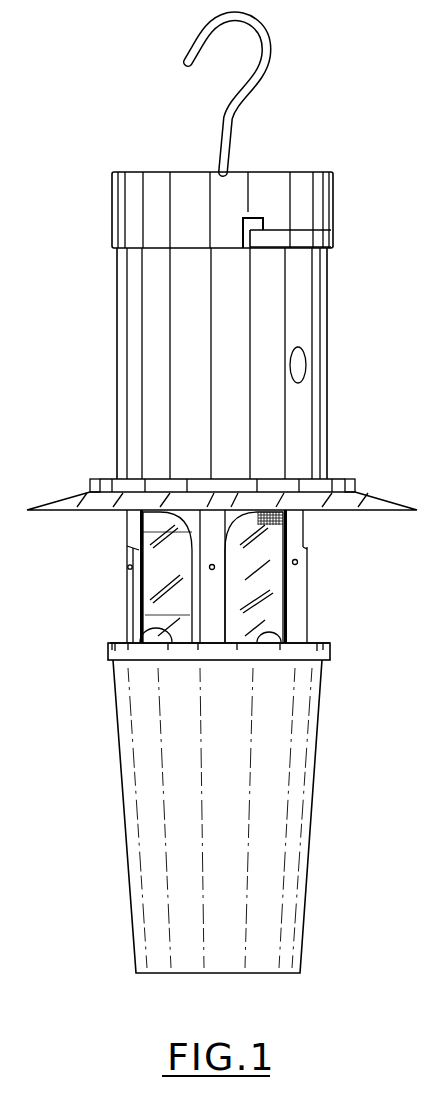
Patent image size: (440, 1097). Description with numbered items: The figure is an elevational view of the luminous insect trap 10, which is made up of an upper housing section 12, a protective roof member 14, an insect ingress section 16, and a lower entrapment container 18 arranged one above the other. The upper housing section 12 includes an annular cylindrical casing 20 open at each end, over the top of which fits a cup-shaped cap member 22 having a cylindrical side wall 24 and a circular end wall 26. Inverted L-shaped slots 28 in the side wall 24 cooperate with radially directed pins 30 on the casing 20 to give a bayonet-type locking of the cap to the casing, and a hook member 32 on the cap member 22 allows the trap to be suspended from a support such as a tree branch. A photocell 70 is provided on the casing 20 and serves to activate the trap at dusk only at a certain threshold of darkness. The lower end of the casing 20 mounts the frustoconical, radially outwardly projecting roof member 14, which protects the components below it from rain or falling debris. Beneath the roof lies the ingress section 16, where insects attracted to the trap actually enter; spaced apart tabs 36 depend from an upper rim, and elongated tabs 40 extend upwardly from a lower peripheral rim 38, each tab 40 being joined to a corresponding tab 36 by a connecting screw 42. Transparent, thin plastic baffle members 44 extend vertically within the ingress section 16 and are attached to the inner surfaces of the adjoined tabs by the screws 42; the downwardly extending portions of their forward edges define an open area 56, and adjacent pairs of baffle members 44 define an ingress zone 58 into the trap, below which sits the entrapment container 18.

The luminous insect trap 10 is at (300, 166).
The upper housing section 12 is at (116, 278).
The protective roof member 14 is at (90, 478).
The insect ingress section 16 is at (92, 592).
The lower entrapment container 18 is at (112, 825).
The cylindrical casing 20 is at (147, 335).
The cap member 22 is at (113, 202).
The cylindrical side wall 24 is at (232, 190).
The circular end wall 26 is at (160, 168).
The inverted L-shaped slot 28 is at (331, 238).
The radially directed pin 30 is at (265, 221).
The hook member 32 is at (260, 78).
The spaced apart tab 36 is at (292, 531).
The lower peripheral rim 38 is at (305, 652).
The elongated tab 40 is at (295, 600).
The connecting screw 42 is at (293, 563).
The baffle member 44 is at (177, 622).
The downwardly extending open area 56 is at (290, 585).
The ingress zone 58 is at (179, 629).
The photocell 70 is at (303, 365).